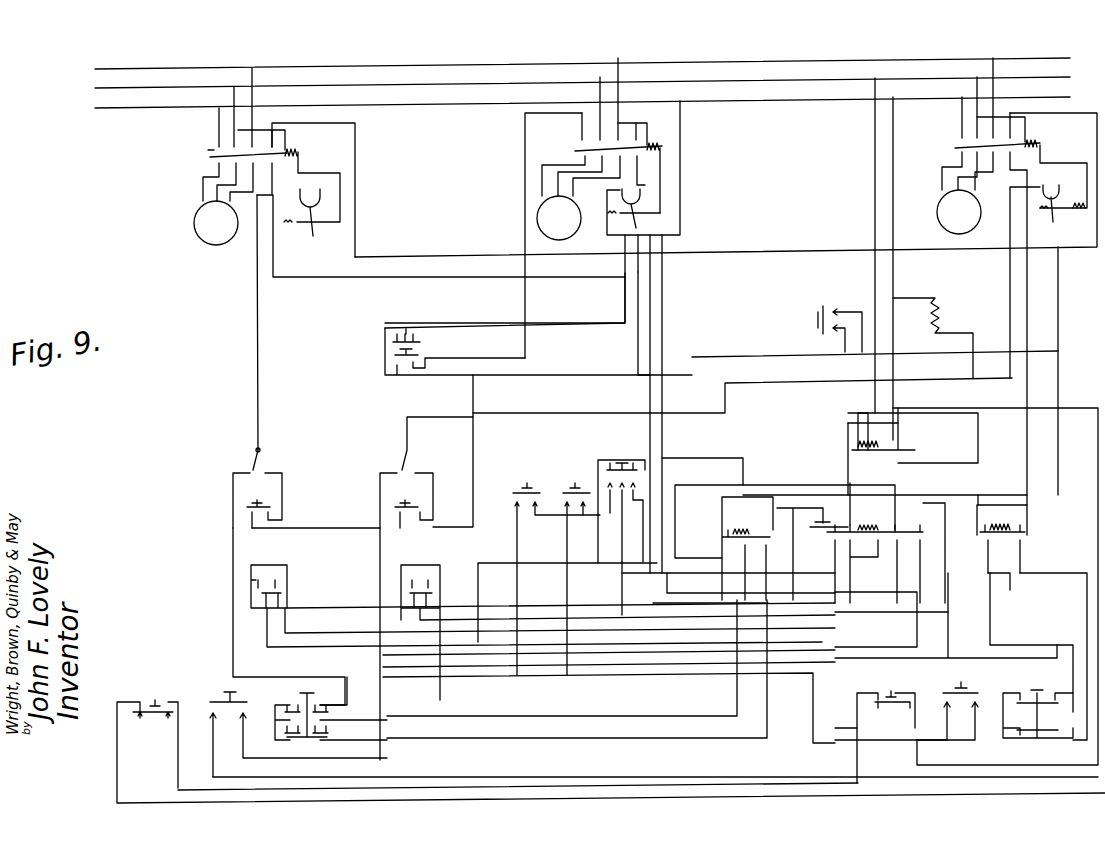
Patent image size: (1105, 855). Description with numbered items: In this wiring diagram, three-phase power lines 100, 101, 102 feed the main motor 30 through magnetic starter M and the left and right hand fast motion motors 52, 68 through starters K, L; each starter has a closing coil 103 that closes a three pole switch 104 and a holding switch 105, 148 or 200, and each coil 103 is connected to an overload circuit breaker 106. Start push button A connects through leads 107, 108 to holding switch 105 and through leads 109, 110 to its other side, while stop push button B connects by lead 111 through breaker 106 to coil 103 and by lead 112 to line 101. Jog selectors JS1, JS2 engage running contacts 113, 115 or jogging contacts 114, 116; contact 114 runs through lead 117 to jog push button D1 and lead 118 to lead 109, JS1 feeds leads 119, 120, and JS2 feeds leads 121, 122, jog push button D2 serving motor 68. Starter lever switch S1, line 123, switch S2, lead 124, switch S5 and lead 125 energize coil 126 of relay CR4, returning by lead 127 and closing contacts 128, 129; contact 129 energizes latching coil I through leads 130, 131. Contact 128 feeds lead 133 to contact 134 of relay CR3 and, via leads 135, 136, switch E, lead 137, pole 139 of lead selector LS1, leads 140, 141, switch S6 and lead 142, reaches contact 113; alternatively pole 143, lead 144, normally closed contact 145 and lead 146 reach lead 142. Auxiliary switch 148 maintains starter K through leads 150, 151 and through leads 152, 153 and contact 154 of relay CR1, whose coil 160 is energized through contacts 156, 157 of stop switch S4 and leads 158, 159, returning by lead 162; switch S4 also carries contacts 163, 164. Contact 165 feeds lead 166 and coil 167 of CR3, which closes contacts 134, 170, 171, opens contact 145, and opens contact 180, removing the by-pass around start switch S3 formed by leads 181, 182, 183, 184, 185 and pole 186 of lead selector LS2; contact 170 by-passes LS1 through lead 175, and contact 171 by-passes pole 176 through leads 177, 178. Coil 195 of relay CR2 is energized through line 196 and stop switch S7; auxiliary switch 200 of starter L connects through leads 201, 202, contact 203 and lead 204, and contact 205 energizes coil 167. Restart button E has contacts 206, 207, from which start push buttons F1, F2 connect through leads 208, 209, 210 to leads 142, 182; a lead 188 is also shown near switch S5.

The power line 100 is at (748, 60).
The power line 101 is at (793, 78).
The power line 102 is at (838, 96).
The overload heater 103 is at (300, 153).
The contactor contacts 104 is at (214, 152).
The motor lead 105 is at (636, 160).
The overload relay contact 106 is at (318, 226).
The conductor 107 is at (493, 360).
The conductor 108 is at (638, 110).
The conductor 109 is at (518, 378).
The conductor 110 is at (636, 342).
The conductor 111 is at (495, 325).
The conductor 112 is at (585, 95).
The contact 113 is at (248, 470).
The contact 114 is at (270, 470).
The contact 115 is at (398, 470).
The contact 116 is at (420, 470).
The conductor 117 is at (284, 515).
The conductor 118 is at (350, 527).
The conductor 119 is at (257, 333).
The conductor 120 is at (262, 127).
The conductor 121 is at (682, 405).
The conductor 122 is at (1002, 115).
The conductor 123 is at (840, 308).
The conductor 124 is at (490, 790).
The conductor 125 is at (990, 408).
The contact 126 is at (865, 412).
The conductor 127 is at (873, 185).
The conductor 128 is at (846, 424).
The contact 129 is at (905, 433).
The conductor 130 is at (980, 436).
The conductor 131 is at (898, 300).
The conductor 133 is at (848, 438).
The contact 134 is at (856, 528).
The conductor 135 is at (920, 494).
The conductor 136 is at (695, 456).
The contact 137 is at (598, 462).
The contact 139 is at (252, 606).
The conductor 140 is at (290, 598).
The conductor 141 is at (826, 678).
The conductor 142 is at (252, 590).
The contact 143 is at (288, 575).
The conductor 144 is at (310, 670).
The contact 145 is at (820, 530).
The conductor 146 is at (793, 506).
The conductor 148 is at (268, 160).
The conductor 150 is at (782, 250).
The conductor 151 is at (1060, 310).
The conductor 152 is at (470, 272).
The conductor 153 is at (766, 545).
The conductor 154 is at (775, 492).
The contact 156 is at (290, 730).
The contact 157 is at (328, 730).
The conductor 158 is at (596, 715).
The conductor 159 is at (592, 742).
The contact 160 is at (740, 532).
The conductor 162 is at (681, 160).
The contact 163 is at (288, 704).
The contact 164 is at (328, 708).
The contact 165 is at (722, 520).
The conductor 166 is at (690, 572).
The conductor 167 is at (875, 540).
The conductor 170 is at (850, 500).
The contact 171 is at (918, 527).
The conductor 175 is at (704, 482).
The contact 176 is at (403, 588).
The conductor 177 is at (865, 615).
The contact 178 is at (440, 598).
The conductor 180 is at (945, 535).
The conductor 181 is at (950, 606).
The conductor 182 is at (675, 690).
The conductor 183 is at (383, 555).
The conductor 184 is at (440, 692).
The conductor 185 is at (418, 620).
The contact 186 is at (442, 575).
The conductor 188 is at (905, 660).
The conductor 195 is at (1002, 572).
The conductor 196 is at (1045, 645).
The conductor 200 is at (1003, 160).
The conductor 201 is at (1028, 282).
The conductor 202 is at (1030, 570).
The contact 203 is at (1030, 522).
The conductor 204 is at (978, 492).
The contact 205 is at (978, 535).
The conductor 206 is at (632, 498).
The conductor 207 is at (614, 539).
The conductor 208 is at (567, 586).
The conductor 209 is at (532, 606).
The conductor 210 is at (570, 610).
The motor 30 is at (537, 220).
The motor 52 is at (200, 232).
The motor 68 is at (938, 215).
The contactor K is at (248, 112).
The contactor M is at (618, 104).
The contactor L is at (997, 103).
The relay contact A is at (390, 352).
The relay contact B is at (404, 328).
The relay contact E is at (621, 502).
The relay coil I is at (940, 318).
The switch S1 is at (829, 329).
The switch S2 is at (611, 751).
The switch S3 is at (298, 734).
The switch S4 is at (331, 708).
The switch S5 is at (886, 737).
The switch S6 is at (947, 711).
The switch S7 is at (1038, 703).
The switch F1 is at (551, 577).
The switch F2 is at (572, 577).
The relay contact D1 is at (247, 504).
The relay contact D2 is at (420, 503).
The jog switch JS1 is at (262, 440).
The jog switch JS2 is at (437, 443).
The limit switch LS1 is at (543, 597).
The limit switch LS2 is at (618, 623).
The control relay CR1 is at (747, 548).
The control relay CR2 is at (1002, 539).
The control relay CR3 is at (886, 553).
The control relay CR4 is at (913, 435).